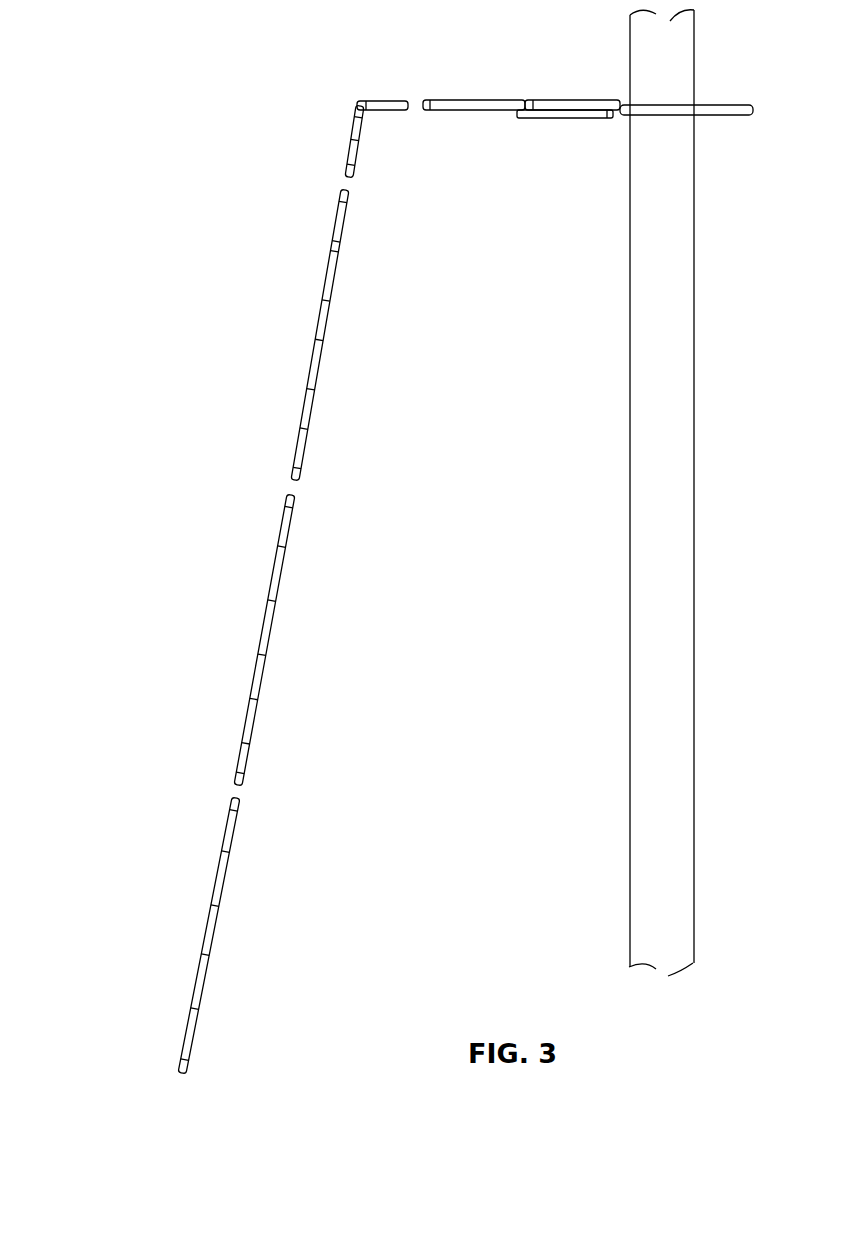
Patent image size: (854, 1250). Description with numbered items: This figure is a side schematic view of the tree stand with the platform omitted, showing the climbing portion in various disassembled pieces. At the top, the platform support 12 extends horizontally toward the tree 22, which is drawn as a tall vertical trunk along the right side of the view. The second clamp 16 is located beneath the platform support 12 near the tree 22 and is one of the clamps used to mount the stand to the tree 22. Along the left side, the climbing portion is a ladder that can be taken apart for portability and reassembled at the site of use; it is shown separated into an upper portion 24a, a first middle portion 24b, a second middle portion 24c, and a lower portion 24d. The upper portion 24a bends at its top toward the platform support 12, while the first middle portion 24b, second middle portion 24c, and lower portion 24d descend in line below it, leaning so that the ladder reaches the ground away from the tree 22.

The platform support 12 is at (503, 100).
The second clamp 16 is at (565, 113).
The tree 22 is at (652, 341).
The upper portion 24a is at (350, 150).
The first middle portion 24b is at (320, 324).
The second middle portion 24c is at (262, 625).
The lower portion 24d is at (204, 937).